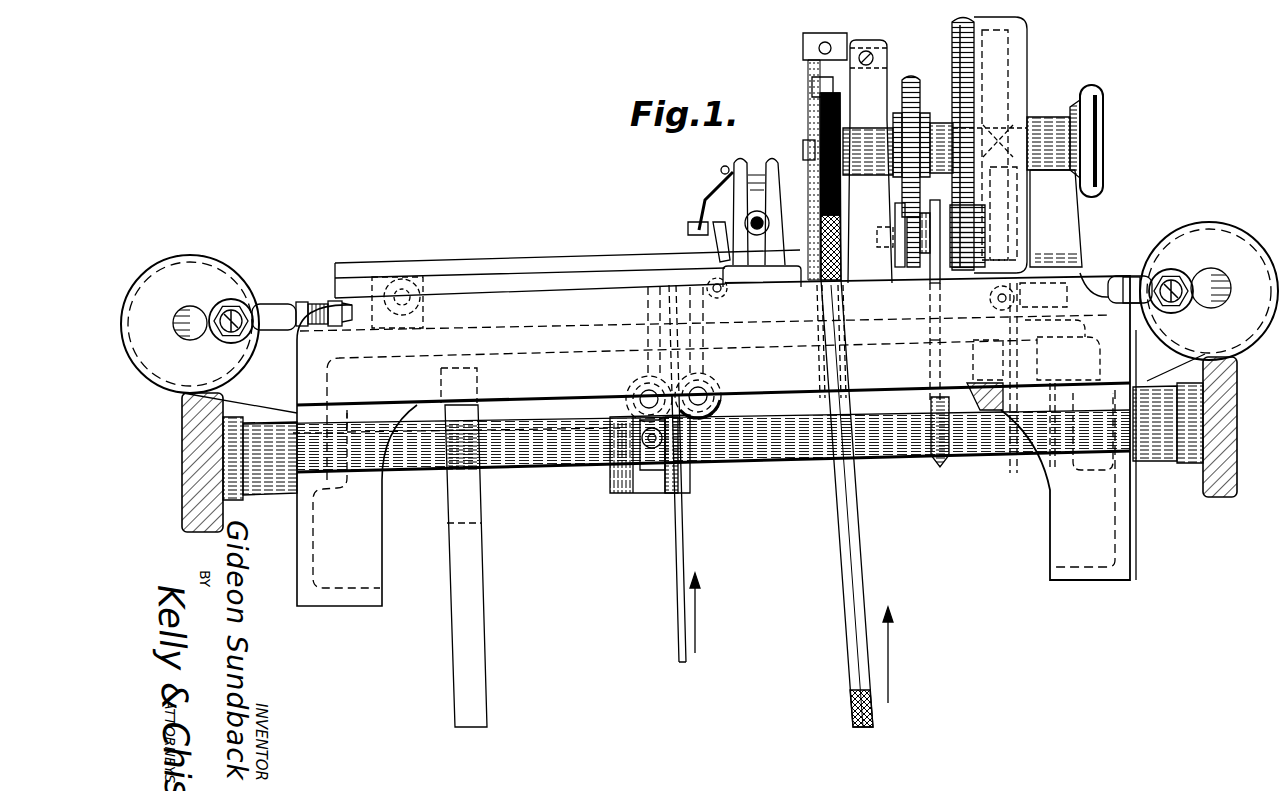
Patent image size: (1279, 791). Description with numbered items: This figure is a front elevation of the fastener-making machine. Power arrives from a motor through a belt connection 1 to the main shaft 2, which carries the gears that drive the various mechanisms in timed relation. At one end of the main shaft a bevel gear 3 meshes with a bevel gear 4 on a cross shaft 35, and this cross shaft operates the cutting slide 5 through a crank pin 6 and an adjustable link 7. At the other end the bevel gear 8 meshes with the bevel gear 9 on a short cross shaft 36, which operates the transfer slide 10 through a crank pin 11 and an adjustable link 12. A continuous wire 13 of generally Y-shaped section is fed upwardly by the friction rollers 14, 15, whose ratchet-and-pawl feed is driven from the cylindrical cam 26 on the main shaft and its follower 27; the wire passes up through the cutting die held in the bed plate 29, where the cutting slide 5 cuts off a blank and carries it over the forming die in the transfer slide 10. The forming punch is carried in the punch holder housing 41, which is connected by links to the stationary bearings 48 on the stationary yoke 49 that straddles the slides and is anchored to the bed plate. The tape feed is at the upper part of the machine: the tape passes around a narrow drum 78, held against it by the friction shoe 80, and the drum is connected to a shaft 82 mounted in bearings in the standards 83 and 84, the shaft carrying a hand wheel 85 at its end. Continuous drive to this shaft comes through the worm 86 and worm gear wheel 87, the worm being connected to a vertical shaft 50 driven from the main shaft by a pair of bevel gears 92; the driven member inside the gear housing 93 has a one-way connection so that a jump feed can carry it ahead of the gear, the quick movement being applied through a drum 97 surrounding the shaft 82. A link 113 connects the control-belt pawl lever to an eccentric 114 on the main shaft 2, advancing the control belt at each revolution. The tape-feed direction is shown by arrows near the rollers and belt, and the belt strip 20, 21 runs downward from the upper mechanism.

The belt connection 1 is at (475, 632).
The main shaft 2 is at (783, 450).
The bevel gear 3 is at (183, 447).
The bevel gear 4 is at (171, 270).
The cutting slide 5 is at (460, 292).
The crank pin 6 is at (243, 311).
The adjustable link 7 is at (310, 300).
The bevel gear 8 is at (1235, 437).
The bevel gear 9 is at (1228, 233).
The transfer slide 10 is at (790, 330).
The crank pin 11 is at (1178, 301).
The adjustable link 12 is at (1093, 280).
The wire 13 is at (680, 617).
The friction roller 14 is at (612, 407).
The friction roller 15 is at (722, 402).
The belt 20 is at (855, 585).
The belt strip 21 is at (836, 530).
The cylindrical cam 26 is at (618, 492).
The follower 27 is at (605, 468).
The bed plate 29 is at (520, 370).
The cross shaft 35 is at (200, 314).
The short cross shaft 36 is at (1205, 273).
The punch holder housing 41 is at (712, 235).
The stationary bearing 48 is at (760, 222).
The stationary yoke 49 is at (737, 170).
The vertical shaft 50 is at (1015, 335).
The drum 78 is at (818, 122).
The friction shoe 80 is at (827, 97).
The shaft 82 is at (805, 150).
The standard 83 is at (860, 263).
The standard 84 is at (1063, 218).
The hand wheel 85 is at (1100, 130).
The worm 86 is at (1030, 110).
The worm gear wheel 87 is at (1020, 66).
The bevel gears 92 is at (984, 412).
The gear housing 93 is at (1012, 42).
The drum 97 is at (900, 77).
The link 113 is at (934, 350).
The eccentric 114 is at (946, 445).